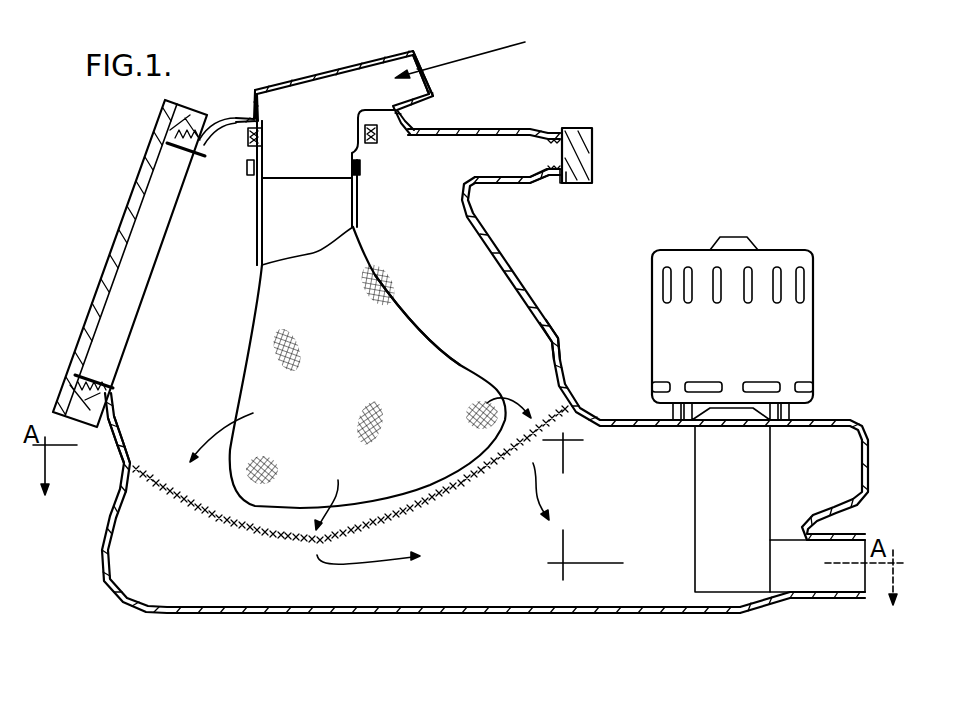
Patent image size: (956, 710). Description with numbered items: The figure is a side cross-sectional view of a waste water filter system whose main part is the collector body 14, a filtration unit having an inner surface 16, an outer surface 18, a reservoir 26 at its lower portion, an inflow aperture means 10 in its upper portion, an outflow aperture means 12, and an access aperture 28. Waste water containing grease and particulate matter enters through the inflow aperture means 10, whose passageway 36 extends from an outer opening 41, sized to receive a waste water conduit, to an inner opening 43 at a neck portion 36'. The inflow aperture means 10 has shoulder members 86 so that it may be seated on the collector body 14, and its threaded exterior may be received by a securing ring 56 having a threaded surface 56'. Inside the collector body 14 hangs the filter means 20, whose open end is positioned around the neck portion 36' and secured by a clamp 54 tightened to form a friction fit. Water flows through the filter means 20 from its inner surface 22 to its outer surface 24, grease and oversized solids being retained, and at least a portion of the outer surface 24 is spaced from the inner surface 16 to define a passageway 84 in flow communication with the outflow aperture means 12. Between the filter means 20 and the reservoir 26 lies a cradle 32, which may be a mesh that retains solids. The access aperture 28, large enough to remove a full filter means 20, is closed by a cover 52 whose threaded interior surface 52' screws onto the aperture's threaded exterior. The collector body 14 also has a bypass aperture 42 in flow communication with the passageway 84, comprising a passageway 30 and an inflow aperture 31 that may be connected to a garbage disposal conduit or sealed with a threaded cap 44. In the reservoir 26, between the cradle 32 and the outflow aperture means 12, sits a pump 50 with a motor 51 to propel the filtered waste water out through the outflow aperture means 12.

The inflow aperture means 10 is at (307, 100).
The outflow aperture means 12 is at (850, 540).
The collector body 14 is at (530, 277).
The inner surface 16 is at (547, 331).
The outer surface 18 is at (560, 347).
The filter means 20 is at (350, 254).
The inner surface 22 is at (262, 232).
The outer surface 24 is at (413, 340).
The reservoir 26 is at (617, 595).
The access aperture 28 is at (167, 115).
The passageway 30 is at (485, 163).
The inflow aperture 31 is at (552, 150).
The cradle 32 is at (163, 485).
The passageway 36 is at (260, 81).
The neck portion 36' is at (326, 187).
The outer opening 41 is at (415, 50).
The bypass aperture 42 is at (457, 130).
The inner opening 43 is at (307, 180).
The cap 44 is at (592, 140).
The pump 50 is at (752, 476).
The motor 51 is at (787, 260).
The cover 52 is at (131, 260).
The threaded interior surface 52' is at (70, 371).
The clamp 54 is at (362, 167).
The securing ring 56 is at (239, 159).
The threaded surface 56' is at (350, 113).
The passageway 84 is at (118, 451).
The shoulder members 86 is at (238, 118).